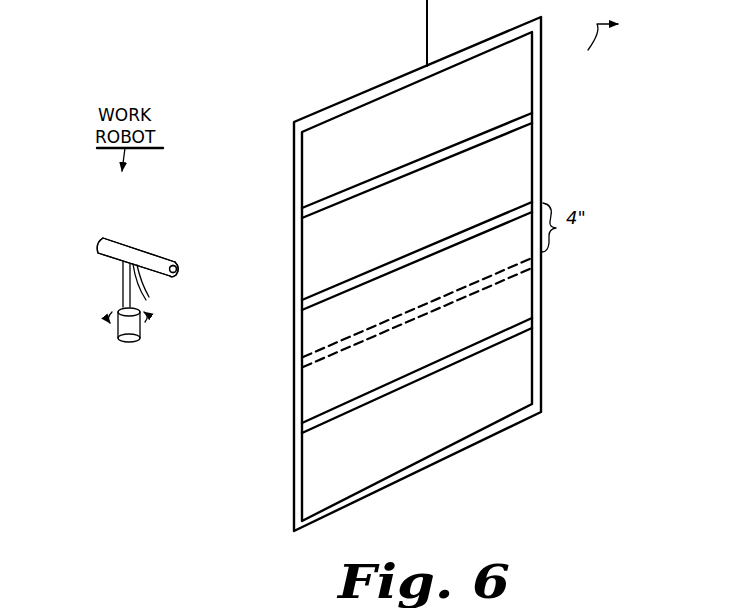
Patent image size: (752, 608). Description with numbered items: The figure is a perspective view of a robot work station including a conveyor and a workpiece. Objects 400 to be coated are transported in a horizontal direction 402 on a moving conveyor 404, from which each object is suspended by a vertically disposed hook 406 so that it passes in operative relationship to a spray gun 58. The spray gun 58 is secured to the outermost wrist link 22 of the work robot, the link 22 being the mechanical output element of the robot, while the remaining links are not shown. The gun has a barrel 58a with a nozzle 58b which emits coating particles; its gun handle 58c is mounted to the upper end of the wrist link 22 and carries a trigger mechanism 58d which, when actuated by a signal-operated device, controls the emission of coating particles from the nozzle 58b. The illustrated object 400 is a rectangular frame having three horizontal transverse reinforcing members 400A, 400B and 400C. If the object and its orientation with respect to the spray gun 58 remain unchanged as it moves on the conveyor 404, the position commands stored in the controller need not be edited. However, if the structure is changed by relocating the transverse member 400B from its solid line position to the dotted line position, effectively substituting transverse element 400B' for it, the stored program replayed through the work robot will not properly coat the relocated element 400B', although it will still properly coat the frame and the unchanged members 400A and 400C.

The object 400 is at (559, 140).
The transverse reinforcing member 400A is at (420, 170).
The transverse reinforcing member 400B is at (415, 212).
The relocated transverse element 400B' is at (417, 312).
The transverse reinforcing member 400C is at (420, 380).
The horizontal direction 402 is at (597, 52).
The moving conveyor 404 is at (217, 1).
The vertically disposed hook 406 is at (425, 26).
The spray coating gun 58 is at (141, 216).
The barrel 58a is at (153, 258).
The nozzle 58b is at (178, 272).
The gun handle 58c is at (127, 285).
The trigger mechanism 58d is at (147, 297).
The wrist link 22 is at (127, 337).